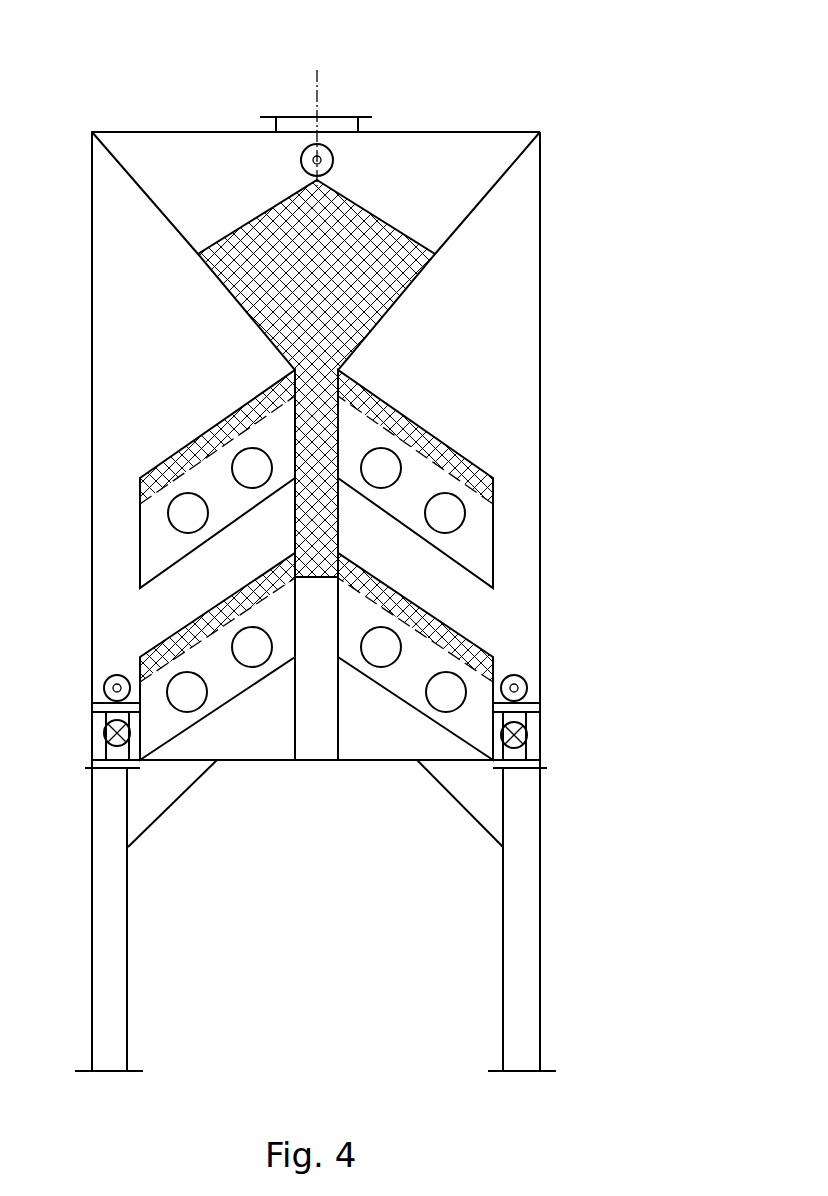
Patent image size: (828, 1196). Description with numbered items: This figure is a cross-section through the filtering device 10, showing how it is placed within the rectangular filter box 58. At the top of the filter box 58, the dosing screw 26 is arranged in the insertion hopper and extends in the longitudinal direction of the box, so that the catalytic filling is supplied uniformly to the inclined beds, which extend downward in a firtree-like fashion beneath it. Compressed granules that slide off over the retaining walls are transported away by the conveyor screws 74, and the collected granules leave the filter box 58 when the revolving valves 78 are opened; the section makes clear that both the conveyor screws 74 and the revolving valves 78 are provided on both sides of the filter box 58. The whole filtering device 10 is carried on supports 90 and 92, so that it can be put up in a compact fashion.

The filtering device 10 is at (500, 82).
The dosing screw 26 is at (322, 150).
The filter box 58 is at (522, 340).
The conveyor screw 74 is at (105, 688).
The revolving valve 78 is at (104, 733).
The support 90 is at (110, 978).
The support 92 is at (520, 978).